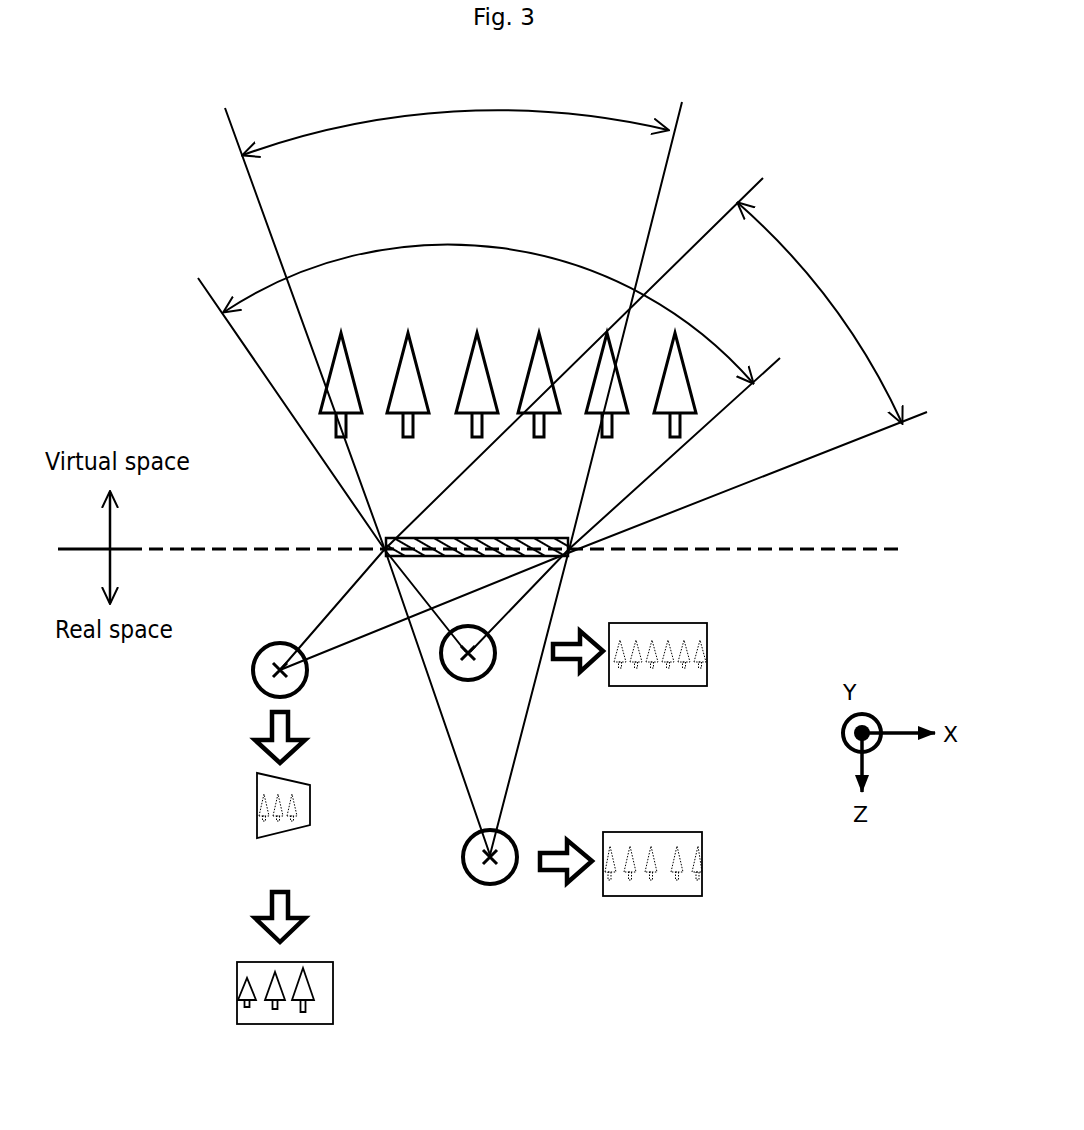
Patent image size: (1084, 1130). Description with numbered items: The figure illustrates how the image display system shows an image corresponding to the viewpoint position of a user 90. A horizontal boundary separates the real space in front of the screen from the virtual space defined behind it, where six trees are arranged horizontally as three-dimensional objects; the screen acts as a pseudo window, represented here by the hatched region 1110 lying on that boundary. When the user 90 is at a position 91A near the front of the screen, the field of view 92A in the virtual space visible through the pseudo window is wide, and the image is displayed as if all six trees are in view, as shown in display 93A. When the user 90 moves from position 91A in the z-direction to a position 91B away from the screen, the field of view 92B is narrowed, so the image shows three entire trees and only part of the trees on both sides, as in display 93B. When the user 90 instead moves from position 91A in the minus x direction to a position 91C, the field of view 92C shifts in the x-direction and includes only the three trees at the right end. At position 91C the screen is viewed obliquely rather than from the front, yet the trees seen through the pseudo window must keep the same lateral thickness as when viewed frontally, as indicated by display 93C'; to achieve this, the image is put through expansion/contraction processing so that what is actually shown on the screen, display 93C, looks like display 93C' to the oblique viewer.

The user 90 is at (258, 685).
The position near the front of the screen 91A is at (489, 495).
The position away from the screen 91B is at (453, 493).
The position displaced in minus x direction 91C is at (590, 447).
The field of view 92A is at (488, 302).
The field of view 92B is at (455, 121).
The field of view 92C is at (820, 313).
The display 93A is at (630, 668).
The display 93B is at (621, 879).
The display 93C is at (285, 973).
The display 93C' is at (282, 791).
The display region 1110 is at (380, 542).